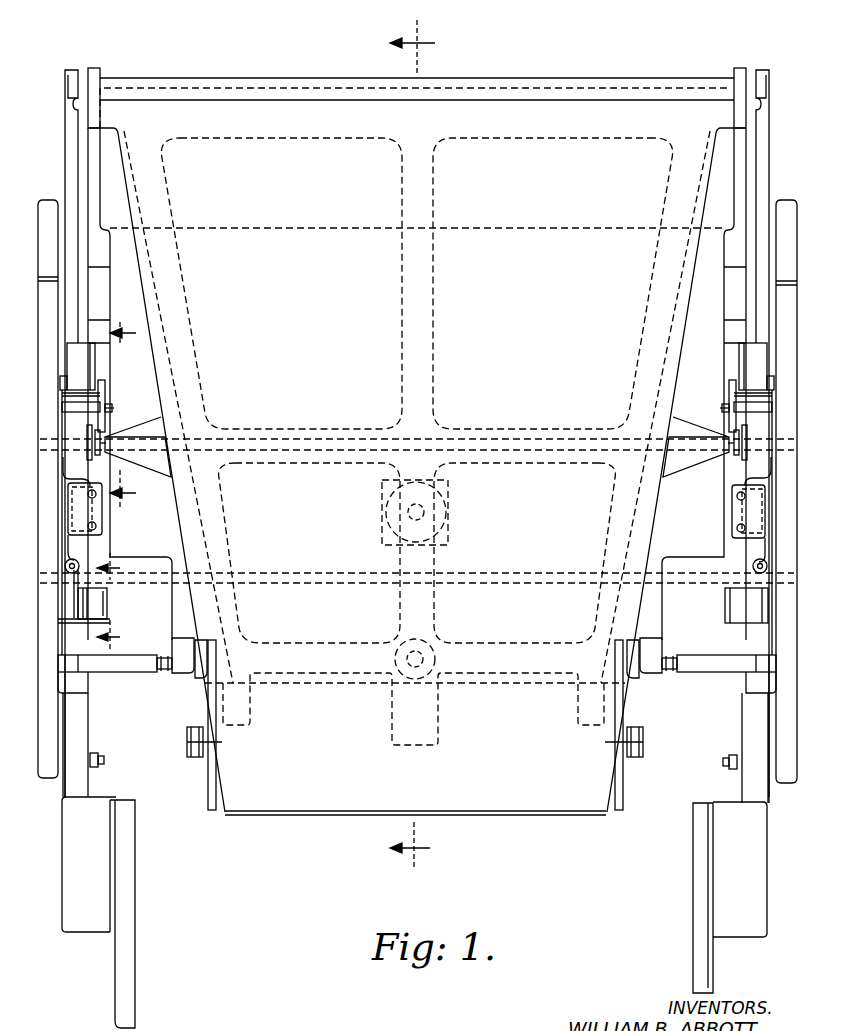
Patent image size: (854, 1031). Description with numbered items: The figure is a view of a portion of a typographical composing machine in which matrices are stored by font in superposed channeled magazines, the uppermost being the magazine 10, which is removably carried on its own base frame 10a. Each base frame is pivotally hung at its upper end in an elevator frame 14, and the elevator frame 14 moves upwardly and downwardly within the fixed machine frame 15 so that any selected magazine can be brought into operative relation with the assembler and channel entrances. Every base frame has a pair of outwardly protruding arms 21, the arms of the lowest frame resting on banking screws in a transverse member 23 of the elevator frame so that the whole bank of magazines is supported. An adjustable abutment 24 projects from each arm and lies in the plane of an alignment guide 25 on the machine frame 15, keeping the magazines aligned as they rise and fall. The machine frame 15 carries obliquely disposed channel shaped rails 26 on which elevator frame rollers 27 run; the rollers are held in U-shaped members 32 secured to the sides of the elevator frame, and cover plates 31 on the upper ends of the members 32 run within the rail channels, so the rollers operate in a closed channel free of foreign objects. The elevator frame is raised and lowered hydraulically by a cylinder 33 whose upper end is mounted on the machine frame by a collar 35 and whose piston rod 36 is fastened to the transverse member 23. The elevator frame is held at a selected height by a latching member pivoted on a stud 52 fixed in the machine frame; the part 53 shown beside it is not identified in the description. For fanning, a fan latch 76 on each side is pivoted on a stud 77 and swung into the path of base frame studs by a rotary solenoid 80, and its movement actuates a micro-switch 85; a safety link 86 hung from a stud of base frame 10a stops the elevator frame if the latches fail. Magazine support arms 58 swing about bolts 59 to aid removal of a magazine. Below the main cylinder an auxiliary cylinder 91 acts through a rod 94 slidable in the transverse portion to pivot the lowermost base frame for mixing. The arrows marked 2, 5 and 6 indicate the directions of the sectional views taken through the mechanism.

The channeled magazine 10 is at (378, 803).
The base frame 10a is at (402, 698).
The elevator frame 14 is at (762, 160).
The fixed machine frame 15 is at (785, 212).
The outwardly protruding arms 21 is at (172, 650).
The transverse member 23 is at (186, 678).
The adjustable abutment 24 is at (165, 673).
The alignment guide 25 is at (122, 665).
The channel shaped rail 26 is at (745, 487).
The elevator frame roller 27 is at (735, 513).
The cover plate 31 is at (100, 518).
The U-shaped member 32 is at (753, 556).
The cylinder 33 is at (440, 497).
The collar 35 is at (450, 521).
The piston rod 36 is at (406, 515).
The stud 52 is at (96, 615).
The ratchet block 53 is at (107, 606).
The magazine support arm 58 is at (125, 900).
The bolt 59 is at (105, 760).
The fan latch 76 is at (103, 395).
The stud 77 is at (112, 410).
The rotary solenoid 80 is at (80, 370).
The micro-switch 85 is at (152, 452).
The safety link 86 is at (740, 440).
The auxiliary cylinder 91 is at (436, 660).
The rod 94 is at (400, 660).
The section line 2 is at (412, 446).
The section line 5 is at (109, 605).
The section line 6 is at (123, 416).